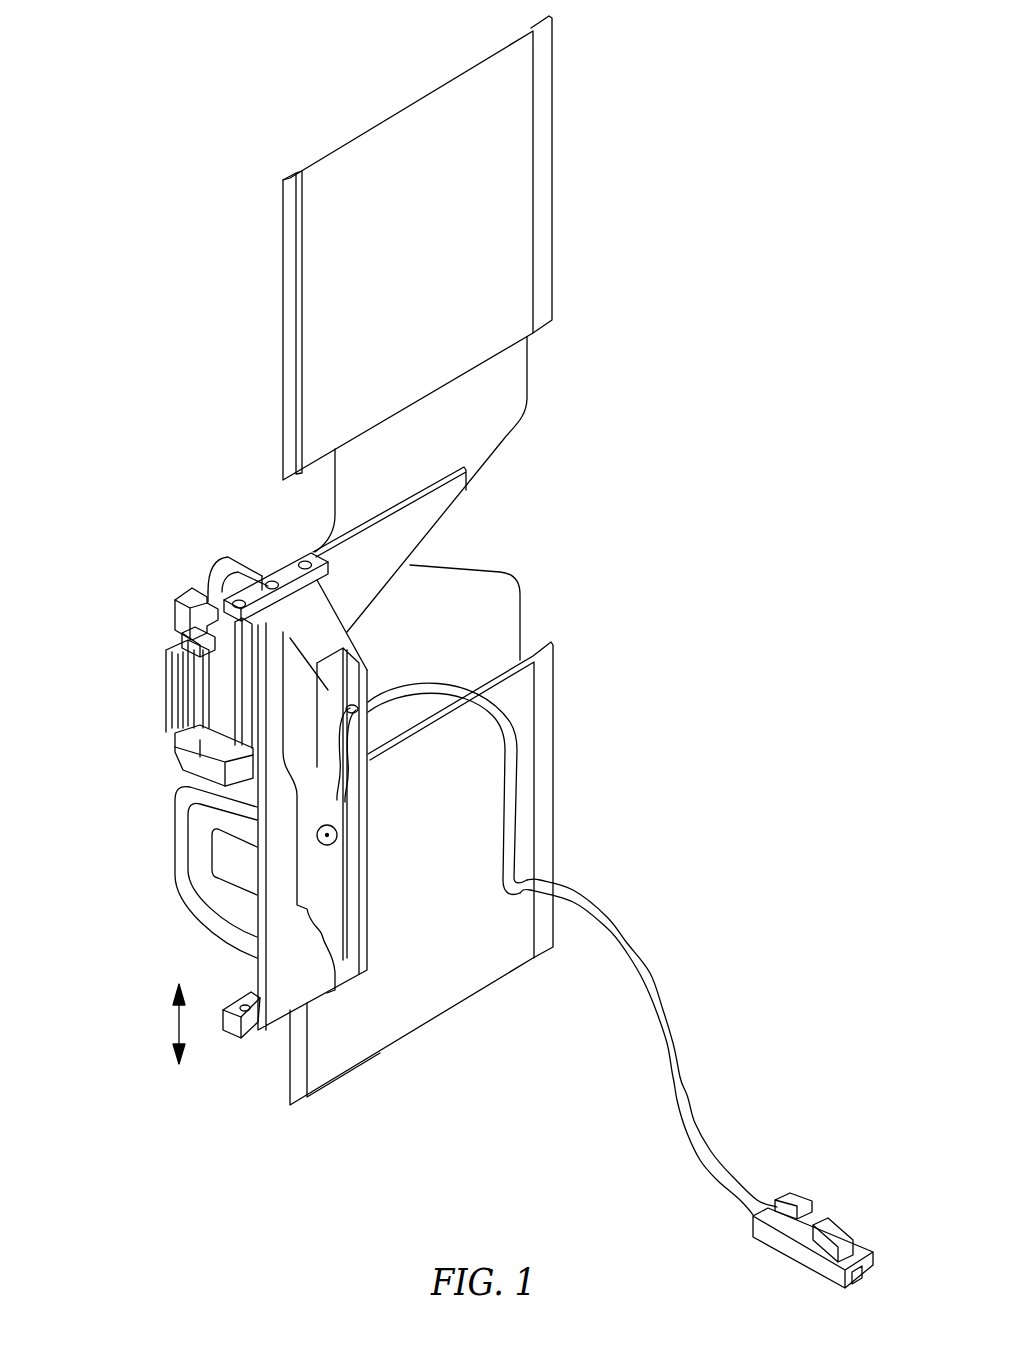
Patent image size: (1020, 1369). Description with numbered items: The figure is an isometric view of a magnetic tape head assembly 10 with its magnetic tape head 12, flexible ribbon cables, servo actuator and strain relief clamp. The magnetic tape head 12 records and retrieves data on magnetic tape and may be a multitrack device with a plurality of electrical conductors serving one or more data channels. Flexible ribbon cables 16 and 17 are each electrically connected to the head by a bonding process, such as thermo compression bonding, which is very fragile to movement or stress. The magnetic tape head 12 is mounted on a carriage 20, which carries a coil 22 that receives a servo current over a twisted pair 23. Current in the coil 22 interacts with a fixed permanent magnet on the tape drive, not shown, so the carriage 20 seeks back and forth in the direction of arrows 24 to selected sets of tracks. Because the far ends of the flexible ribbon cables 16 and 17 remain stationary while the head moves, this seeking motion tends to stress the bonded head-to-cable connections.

The magnetic tape head assembly 10 is at (185, 470).
The magnetic tape head 12 is at (190, 723).
The flexible ribbon cable 16 is at (495, 298).
The flexible ribbon cable 17 is at (545, 790).
The carriage 20 is at (280, 990).
The coil 22 is at (197, 910).
The twisted pair 23 is at (648, 970).
The arrows 24 is at (177, 1025).